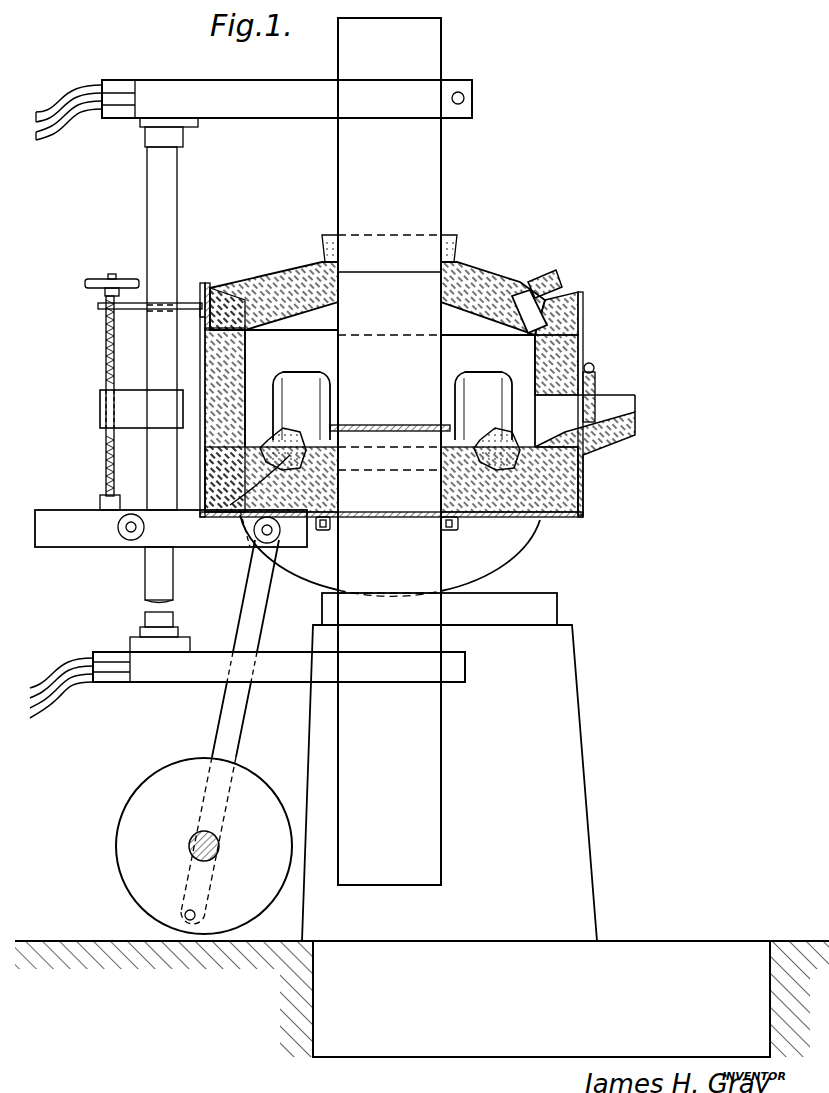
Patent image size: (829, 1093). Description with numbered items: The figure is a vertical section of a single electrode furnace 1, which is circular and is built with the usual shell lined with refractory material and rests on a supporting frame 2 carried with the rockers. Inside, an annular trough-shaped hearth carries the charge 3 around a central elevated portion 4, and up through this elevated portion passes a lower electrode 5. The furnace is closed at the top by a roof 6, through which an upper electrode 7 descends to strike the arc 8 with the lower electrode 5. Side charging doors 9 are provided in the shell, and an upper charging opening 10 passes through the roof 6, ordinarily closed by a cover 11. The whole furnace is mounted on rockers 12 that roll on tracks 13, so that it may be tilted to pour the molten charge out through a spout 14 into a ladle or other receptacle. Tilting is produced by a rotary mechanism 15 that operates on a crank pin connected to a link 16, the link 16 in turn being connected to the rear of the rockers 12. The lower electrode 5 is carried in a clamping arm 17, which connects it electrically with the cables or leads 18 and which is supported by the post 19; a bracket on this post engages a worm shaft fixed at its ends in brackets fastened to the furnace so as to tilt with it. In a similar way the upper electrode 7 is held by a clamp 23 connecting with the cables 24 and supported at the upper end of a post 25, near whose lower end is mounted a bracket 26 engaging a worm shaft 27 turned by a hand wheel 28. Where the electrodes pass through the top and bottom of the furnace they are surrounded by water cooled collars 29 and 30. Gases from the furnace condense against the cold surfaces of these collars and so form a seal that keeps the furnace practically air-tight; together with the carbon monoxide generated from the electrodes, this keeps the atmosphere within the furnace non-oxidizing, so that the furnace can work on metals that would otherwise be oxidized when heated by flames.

The furnace body (crucible wall) 1 is at (246, 355).
The tilting bar / frame 2 is at (240, 505).
The charge 3 is at (270, 430).
The central elevated portion 4 is at (330, 455).
The lower electrode 5 is at (388, 488).
The roof 6 is at (292, 276).
The upper electrode 7 is at (345, 190).
The arc 8 is at (340, 426).
The side charging doors 9 is at (302, 375).
The upper charging opening 10 is at (528, 310).
The cover 11 is at (548, 290).
The rockers 12 is at (480, 555).
The tracks 13 is at (439, 609).
The spout 14 is at (632, 410).
The rotary mechanism 15 is at (120, 838).
The link 16 is at (220, 722).
The clamping arm 17 is at (279, 667).
The cables or leads 18 is at (50, 690).
The post 19 is at (160, 559).
The clamp 23 is at (287, 113).
The cables 24 is at (66, 128).
The post 25 is at (162, 328).
The bracket 26 is at (141, 409).
The worm shaft 27 is at (106, 375).
The hand wheel 28 is at (98, 283).
The water cooled collar 29 is at (460, 247).
The water cooled collar 30 is at (460, 527).